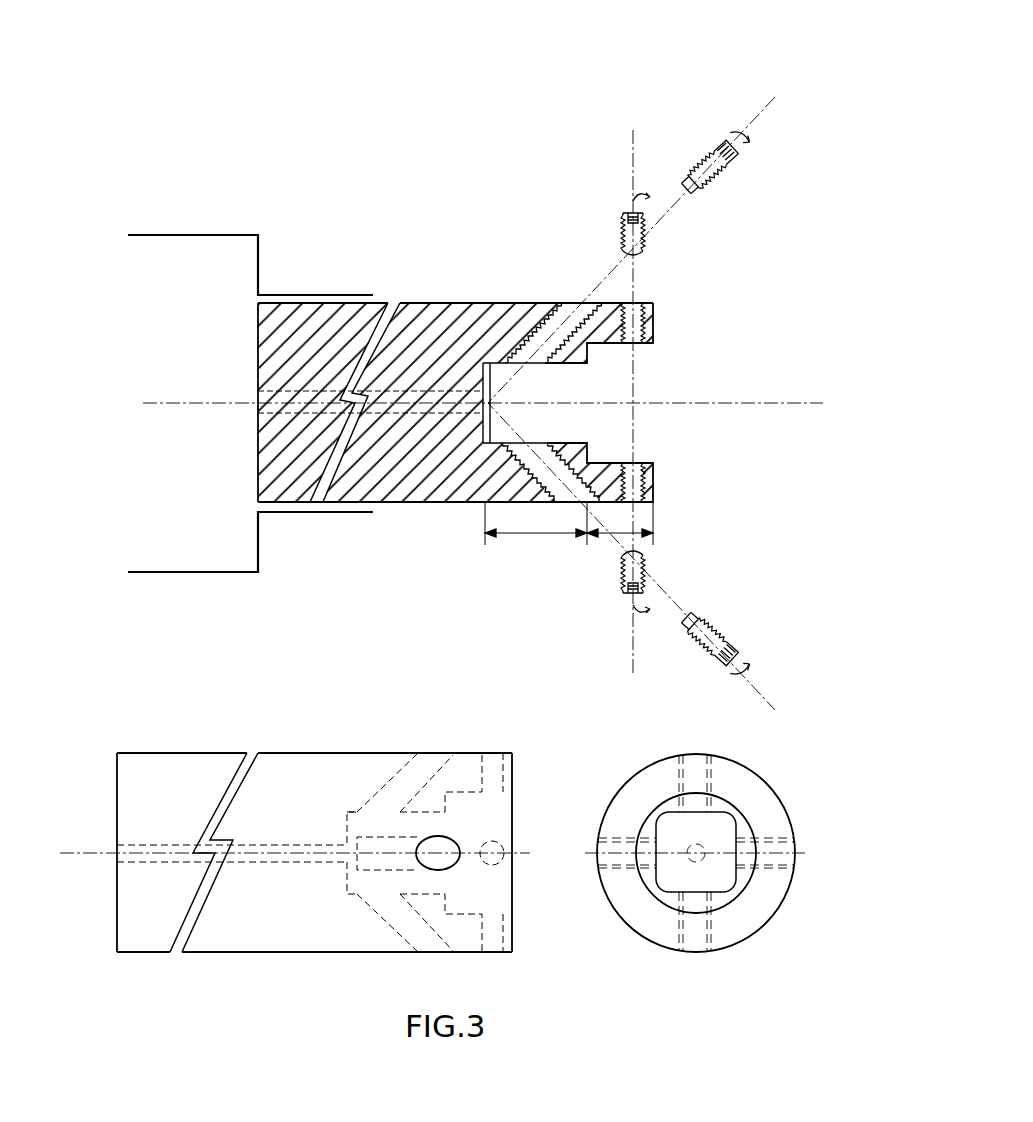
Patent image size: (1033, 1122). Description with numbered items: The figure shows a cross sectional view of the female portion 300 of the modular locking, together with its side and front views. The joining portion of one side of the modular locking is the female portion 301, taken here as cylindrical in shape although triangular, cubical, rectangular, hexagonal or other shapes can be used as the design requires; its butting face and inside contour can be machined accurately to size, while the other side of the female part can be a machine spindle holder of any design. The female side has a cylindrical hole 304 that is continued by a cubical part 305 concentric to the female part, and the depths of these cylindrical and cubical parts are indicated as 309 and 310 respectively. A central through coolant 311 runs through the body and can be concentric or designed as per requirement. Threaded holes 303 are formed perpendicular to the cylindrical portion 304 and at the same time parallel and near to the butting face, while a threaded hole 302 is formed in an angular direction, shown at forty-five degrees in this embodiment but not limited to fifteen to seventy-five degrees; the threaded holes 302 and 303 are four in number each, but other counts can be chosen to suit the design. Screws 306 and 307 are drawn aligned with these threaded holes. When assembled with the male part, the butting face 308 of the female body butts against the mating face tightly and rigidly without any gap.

The female portion 300 is at (270, 94).
The female portion 301 is at (440, 347).
The threaded hole 302 is at (528, 328).
The threaded holes 303 is at (647, 313).
The cylindrical hole 304 is at (610, 466).
The cubical part 305 is at (571, 452).
The set screw 306 is at (625, 212).
The angled set screw 307 is at (693, 162).
The butting face 308 is at (158, 570).
The depth of cylindrical part 309 is at (593, 512).
The depth of cubical part 310 is at (536, 524).
The central through coolant 311 is at (410, 415).